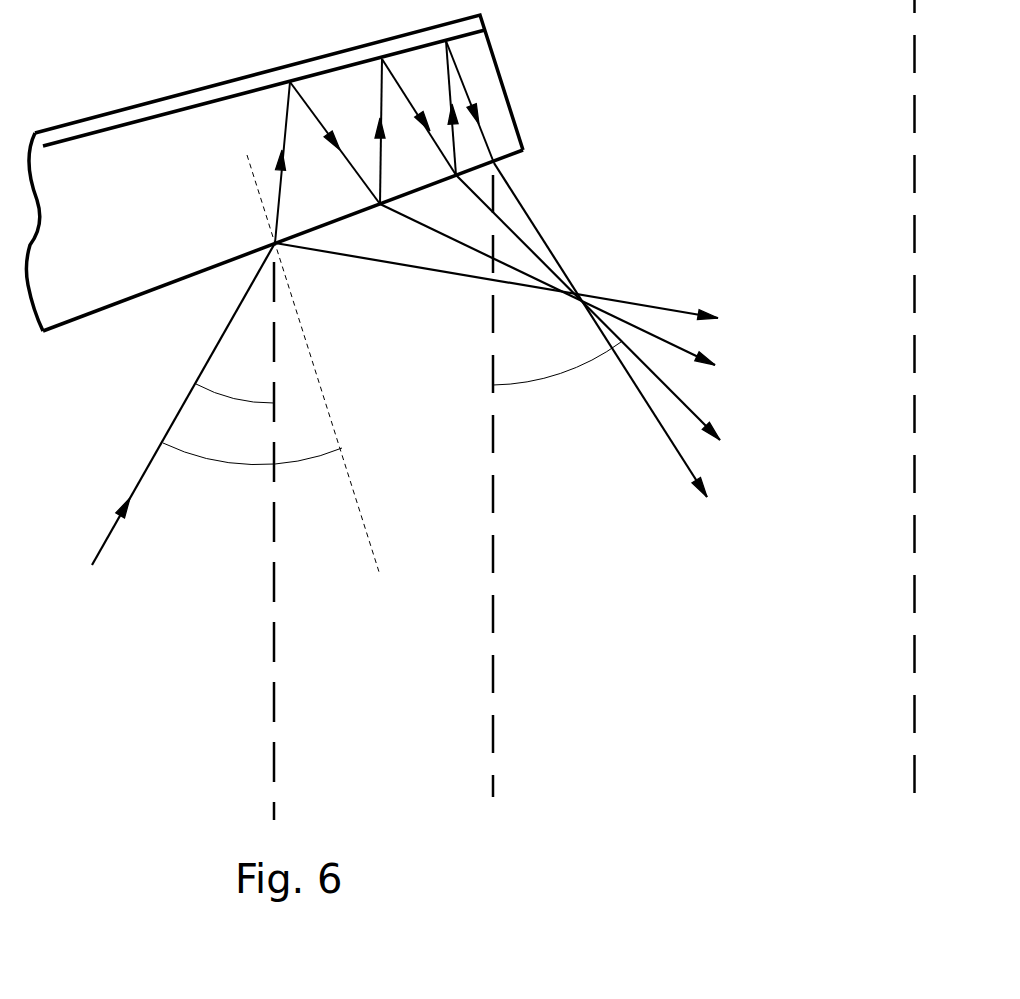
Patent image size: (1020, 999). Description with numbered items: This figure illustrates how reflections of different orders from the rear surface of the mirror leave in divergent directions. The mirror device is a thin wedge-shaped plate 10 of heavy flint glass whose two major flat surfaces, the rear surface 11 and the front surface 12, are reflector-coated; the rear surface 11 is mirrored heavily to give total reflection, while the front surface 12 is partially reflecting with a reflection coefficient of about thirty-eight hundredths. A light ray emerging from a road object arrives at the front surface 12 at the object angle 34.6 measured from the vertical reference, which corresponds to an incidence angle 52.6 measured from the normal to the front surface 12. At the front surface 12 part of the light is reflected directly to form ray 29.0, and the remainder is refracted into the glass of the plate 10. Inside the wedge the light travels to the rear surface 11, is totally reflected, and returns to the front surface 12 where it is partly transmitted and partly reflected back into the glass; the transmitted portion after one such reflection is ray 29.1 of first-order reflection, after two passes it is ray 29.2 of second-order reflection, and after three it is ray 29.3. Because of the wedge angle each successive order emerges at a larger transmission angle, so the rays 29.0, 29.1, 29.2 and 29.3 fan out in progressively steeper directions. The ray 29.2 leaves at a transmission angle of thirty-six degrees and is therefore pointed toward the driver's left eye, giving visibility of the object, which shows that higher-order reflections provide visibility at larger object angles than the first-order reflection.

The wedge-shaped plate 10 is at (103, 185).
The rear surface 11 is at (213, 92).
The front surface 12 is at (123, 302).
The ray reflected at the front surface 29.0 is at (534, 289).
The ray of first-order reflection at the rear surface 29.1 is at (582, 295).
The ray of second-order reflection from the rear surface 29.2 is at (622, 317).
The ray of third-order reflection from the rear surface 29.3 is at (633, 343).
The object angle 34.6 is at (225, 398).
The angle of incidence relative to the front surface normal 52.6 is at (247, 465).